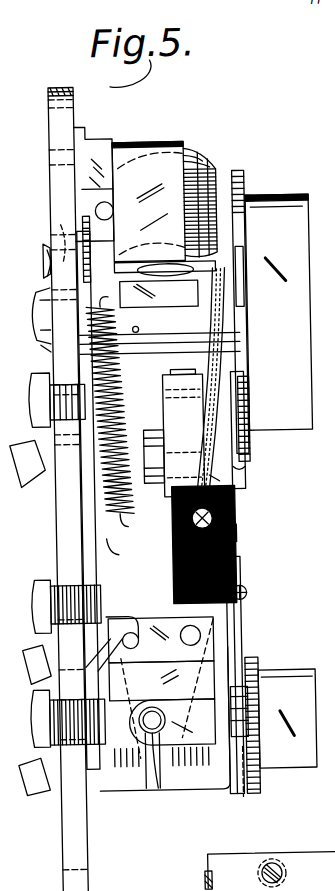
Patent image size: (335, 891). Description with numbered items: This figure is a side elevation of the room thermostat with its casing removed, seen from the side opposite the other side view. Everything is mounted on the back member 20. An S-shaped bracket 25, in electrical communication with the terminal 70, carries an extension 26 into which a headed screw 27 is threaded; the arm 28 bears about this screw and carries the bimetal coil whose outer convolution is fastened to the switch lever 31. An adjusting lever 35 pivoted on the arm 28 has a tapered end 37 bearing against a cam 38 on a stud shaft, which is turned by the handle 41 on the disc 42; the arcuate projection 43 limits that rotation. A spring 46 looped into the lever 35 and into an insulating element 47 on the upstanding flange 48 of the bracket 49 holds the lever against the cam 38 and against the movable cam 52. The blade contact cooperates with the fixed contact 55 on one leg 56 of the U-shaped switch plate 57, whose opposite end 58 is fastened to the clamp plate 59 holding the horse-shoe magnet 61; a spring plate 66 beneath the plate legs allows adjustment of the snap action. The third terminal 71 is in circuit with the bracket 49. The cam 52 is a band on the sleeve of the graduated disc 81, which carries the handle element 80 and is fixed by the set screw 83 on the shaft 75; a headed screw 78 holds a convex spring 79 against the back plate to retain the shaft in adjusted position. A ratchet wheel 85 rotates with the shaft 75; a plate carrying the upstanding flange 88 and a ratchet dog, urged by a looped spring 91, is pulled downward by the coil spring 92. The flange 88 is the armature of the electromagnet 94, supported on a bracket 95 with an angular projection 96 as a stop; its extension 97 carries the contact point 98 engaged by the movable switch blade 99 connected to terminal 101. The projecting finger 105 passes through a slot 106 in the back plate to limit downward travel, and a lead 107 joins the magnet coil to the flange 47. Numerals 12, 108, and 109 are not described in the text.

The lead wire 12 is at (240, 520).
The back member 20 is at (58, 840).
The bracket 25 is at (76, 542).
The extension 26 is at (148, 432).
The headed screw 27 is at (238, 470).
The arm 28 is at (226, 420).
The switch lever 31 is at (190, 395).
The adjusting lever 35 is at (224, 612).
The tapered end 37 is at (232, 800).
The cam 38 is at (333, 698).
The handle 41 is at (276, 772).
The disc 42 is at (250, 795).
The arcuate projection 43 is at (246, 655).
The spring 46 is at (238, 594).
The insulating element 47 is at (228, 545).
The upstanding flange 48 is at (98, 545).
The bracket 49 is at (120, 614).
The movable cam 52 is at (228, 330).
The fixed contact 55 is at (137, 735).
The leg 56 is at (333, 730).
The switch plate 57 is at (200, 677).
The opposite end 58 is at (200, 635).
The clamp plate 59 is at (240, 650).
The horse-shoe magnet 61 is at (105, 772).
The spring plate 66 is at (148, 735).
The terminal 70 is at (28, 580).
The third terminal 71 is at (45, 790).
The shaft 75 is at (46, 336).
The headed screw 78 is at (30, 300).
The convex spring 79 is at (42, 250).
The handle element 80 is at (275, 215).
The graduated disc 81 is at (238, 178).
The set screw 83 is at (131, 345).
The ratchet wheel 85 is at (92, 210).
The upstanding flange 88 is at (166, 300).
The looped spring 91 is at (330, 440).
The coil spring 92 is at (90, 490).
The electromagnet 94 is at (198, 168).
The bracket 95 is at (143, 173).
The angular projection 96 is at (175, 230).
The extension 97 is at (88, 190).
The contact point 98 is at (108, 206).
The movable switch blade 99 is at (333, 826).
The terminal 101 is at (40, 425).
The projecting finger 105 is at (45, 262).
The slot 106 is at (58, 225).
The lead 107 is at (205, 480).
The member 108 is at (326, 268).
The member 109 is at (326, 240).